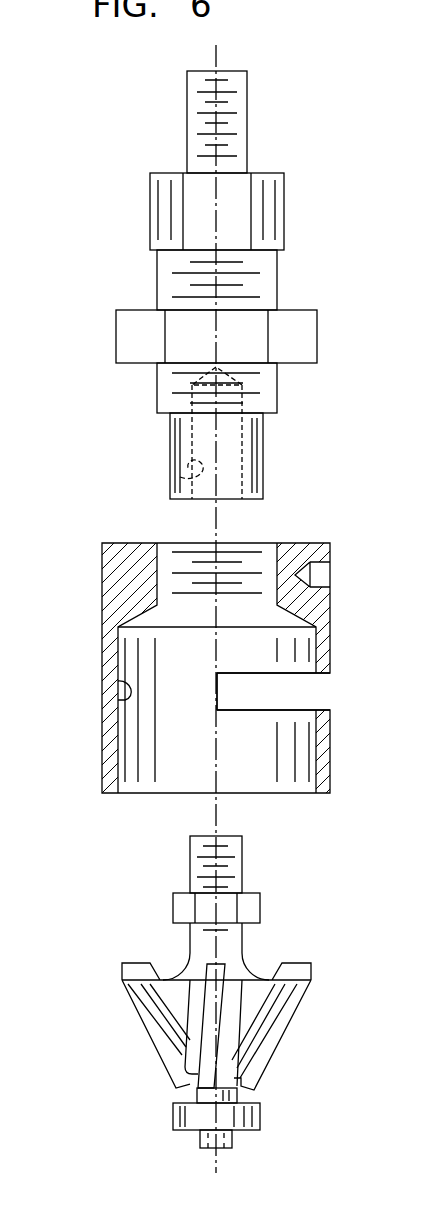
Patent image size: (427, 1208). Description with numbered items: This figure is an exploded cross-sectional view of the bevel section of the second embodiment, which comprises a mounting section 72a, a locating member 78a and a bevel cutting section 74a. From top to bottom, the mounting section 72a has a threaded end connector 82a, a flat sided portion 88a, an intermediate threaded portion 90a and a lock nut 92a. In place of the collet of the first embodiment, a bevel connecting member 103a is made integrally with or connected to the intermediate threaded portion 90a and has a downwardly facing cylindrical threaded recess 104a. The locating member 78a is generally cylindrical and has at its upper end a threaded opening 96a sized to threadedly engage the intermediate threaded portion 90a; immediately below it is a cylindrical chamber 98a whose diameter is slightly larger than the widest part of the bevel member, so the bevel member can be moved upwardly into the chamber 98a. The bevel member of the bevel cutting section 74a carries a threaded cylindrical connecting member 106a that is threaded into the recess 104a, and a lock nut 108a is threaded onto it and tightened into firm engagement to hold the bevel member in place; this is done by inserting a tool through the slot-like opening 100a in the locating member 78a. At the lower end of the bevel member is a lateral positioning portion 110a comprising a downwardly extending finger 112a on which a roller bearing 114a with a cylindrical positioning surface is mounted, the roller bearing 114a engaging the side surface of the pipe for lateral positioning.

The mounting section 72a is at (306, 274).
The threaded end connector 82a is at (193, 123).
The flat sided portion 88a is at (162, 213).
The intermediate threaded portion 90a is at (172, 285).
The lock nut 92a is at (123, 337).
The bevel connecting member 103a is at (177, 442).
The cylindrical threaded recess 104a is at (180, 477).
The locating member 78a is at (97, 742).
The threaded opening 96a is at (160, 557).
The cylindrical chamber 98a is at (118, 681).
The slot-like opening 100a is at (280, 673).
The lateral positioning portion 110a is at (268, 1124).
The threaded cylindrical connecting member 106a is at (190, 872).
The lock nut 108a is at (180, 912).
The bevel cutting section 74a is at (296, 1020).
The downwardly extending finger 112a is at (188, 1098).
The roller bearing 114a is at (180, 1115).